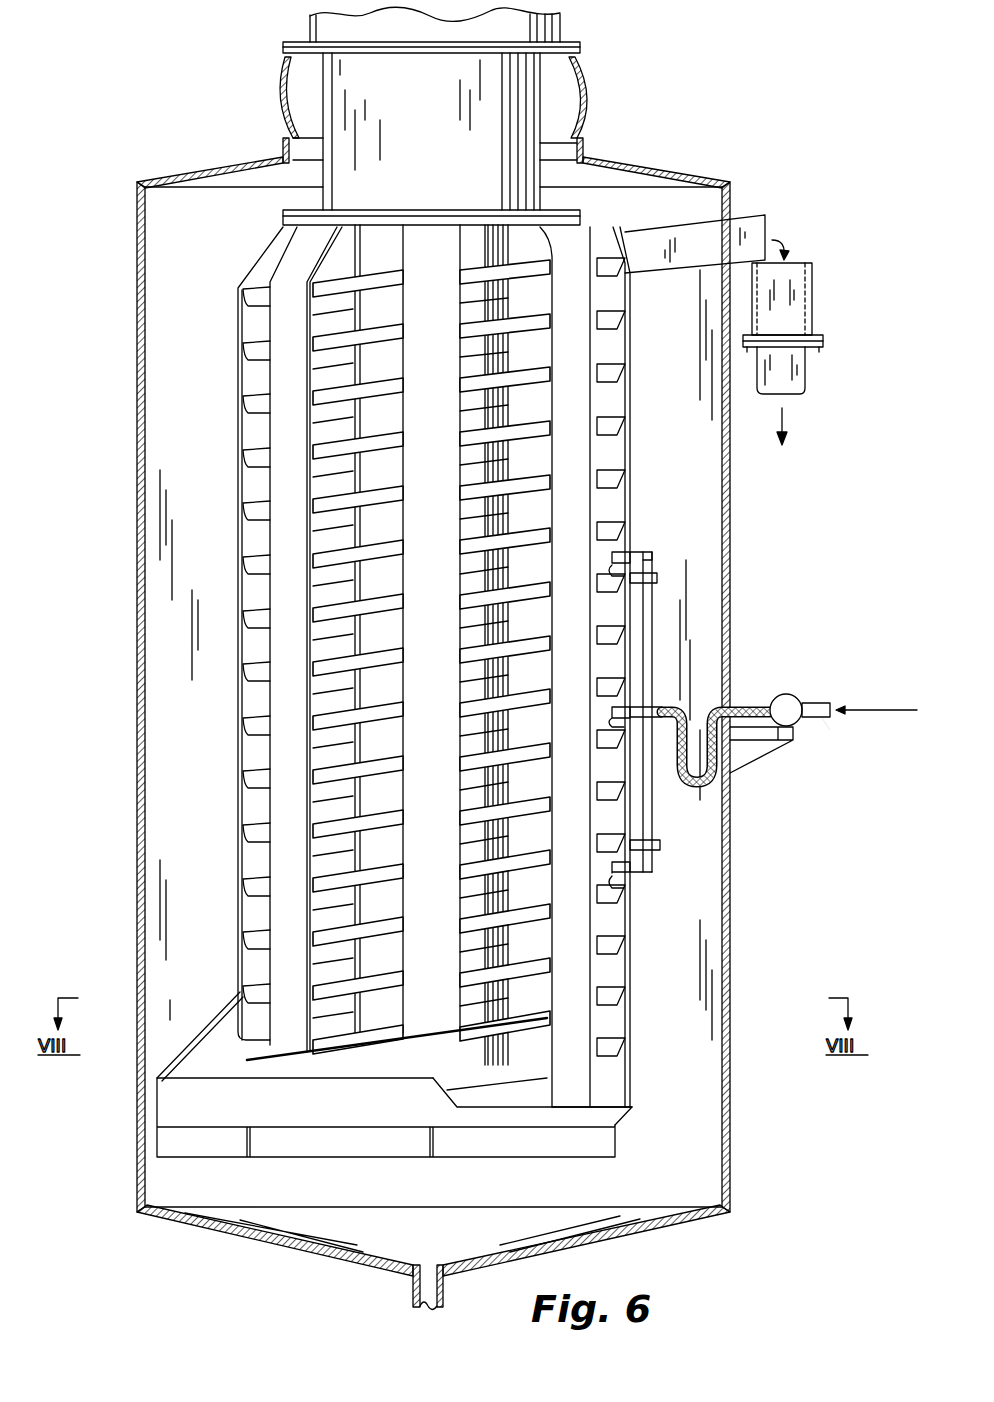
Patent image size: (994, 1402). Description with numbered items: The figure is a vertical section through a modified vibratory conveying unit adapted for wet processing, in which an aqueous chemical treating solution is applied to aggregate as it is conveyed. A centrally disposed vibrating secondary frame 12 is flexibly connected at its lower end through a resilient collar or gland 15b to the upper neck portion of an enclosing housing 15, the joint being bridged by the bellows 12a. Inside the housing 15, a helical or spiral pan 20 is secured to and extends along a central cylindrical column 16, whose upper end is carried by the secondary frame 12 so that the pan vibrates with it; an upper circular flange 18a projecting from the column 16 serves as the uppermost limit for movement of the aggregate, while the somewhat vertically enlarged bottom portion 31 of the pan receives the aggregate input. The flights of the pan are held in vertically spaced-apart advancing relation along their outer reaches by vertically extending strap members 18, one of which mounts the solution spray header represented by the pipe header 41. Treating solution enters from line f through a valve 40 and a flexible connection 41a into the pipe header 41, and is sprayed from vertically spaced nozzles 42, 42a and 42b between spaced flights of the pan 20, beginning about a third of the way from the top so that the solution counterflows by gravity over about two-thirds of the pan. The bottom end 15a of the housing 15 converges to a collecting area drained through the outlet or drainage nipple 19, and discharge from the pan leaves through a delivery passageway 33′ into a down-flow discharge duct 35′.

The secondary frame 12 is at (560, 24).
The expansion bellows 12a is at (323, 90).
The enclosing housing 15 is at (731, 968).
The bottom end of the housing 15a is at (516, 1252).
The resilient collar or gland 15b is at (590, 100).
The central cylindrical column 16 is at (362, 1068).
The strap member 18 is at (582, 456).
The upper circular flange 18a is at (283, 232).
The outlet or drainage nipple 19 is at (413, 1298).
The helical pan 20 is at (258, 884).
The vertically enlarged bottom portion of the helical pan 31 is at (205, 1095).
The delivery passageway 33′ is at (660, 232).
The down-flow discharge duct 35′ is at (812, 320).
The valve 40 is at (786, 694).
The pipe header 41 is at (652, 624).
The flexible hose 41a is at (692, 786).
The spray nozzle or head 42 is at (628, 552).
The spray nozzle or head 42a is at (628, 710).
The spray nozzle or head 42b is at (625, 882).
The line f is at (822, 720).